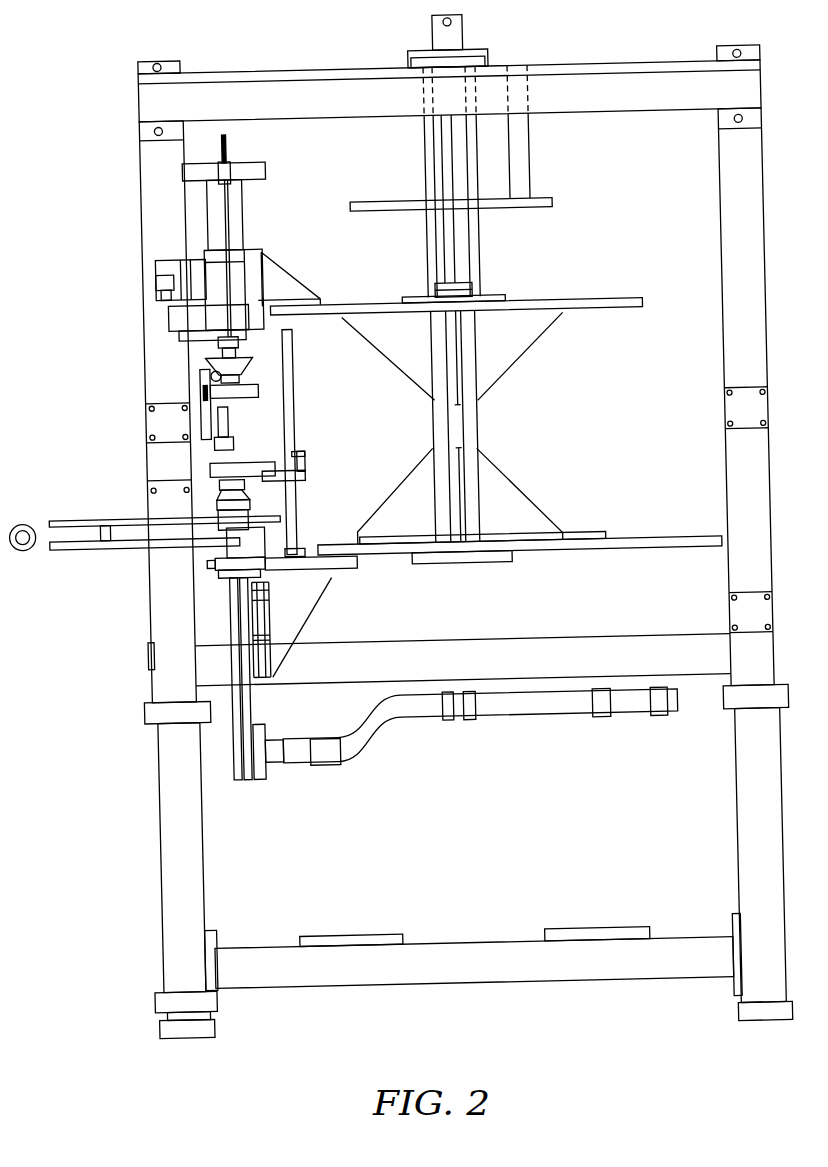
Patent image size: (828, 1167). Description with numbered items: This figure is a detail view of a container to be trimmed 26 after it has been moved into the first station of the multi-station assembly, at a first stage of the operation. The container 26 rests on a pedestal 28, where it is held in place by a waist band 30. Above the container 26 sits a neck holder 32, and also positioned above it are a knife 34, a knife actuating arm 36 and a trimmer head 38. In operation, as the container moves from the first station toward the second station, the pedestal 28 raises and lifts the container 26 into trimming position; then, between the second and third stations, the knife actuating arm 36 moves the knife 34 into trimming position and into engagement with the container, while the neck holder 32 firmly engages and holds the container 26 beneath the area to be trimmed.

The container to be trimmed 26 is at (223, 485).
The pedestal 28 is at (204, 560).
The waist band 30 is at (258, 536).
The neck holder 32 is at (247, 465).
The knife 34 is at (217, 440).
The knife actuating arm 36 is at (231, 422).
The trimmer head 38 is at (204, 387).